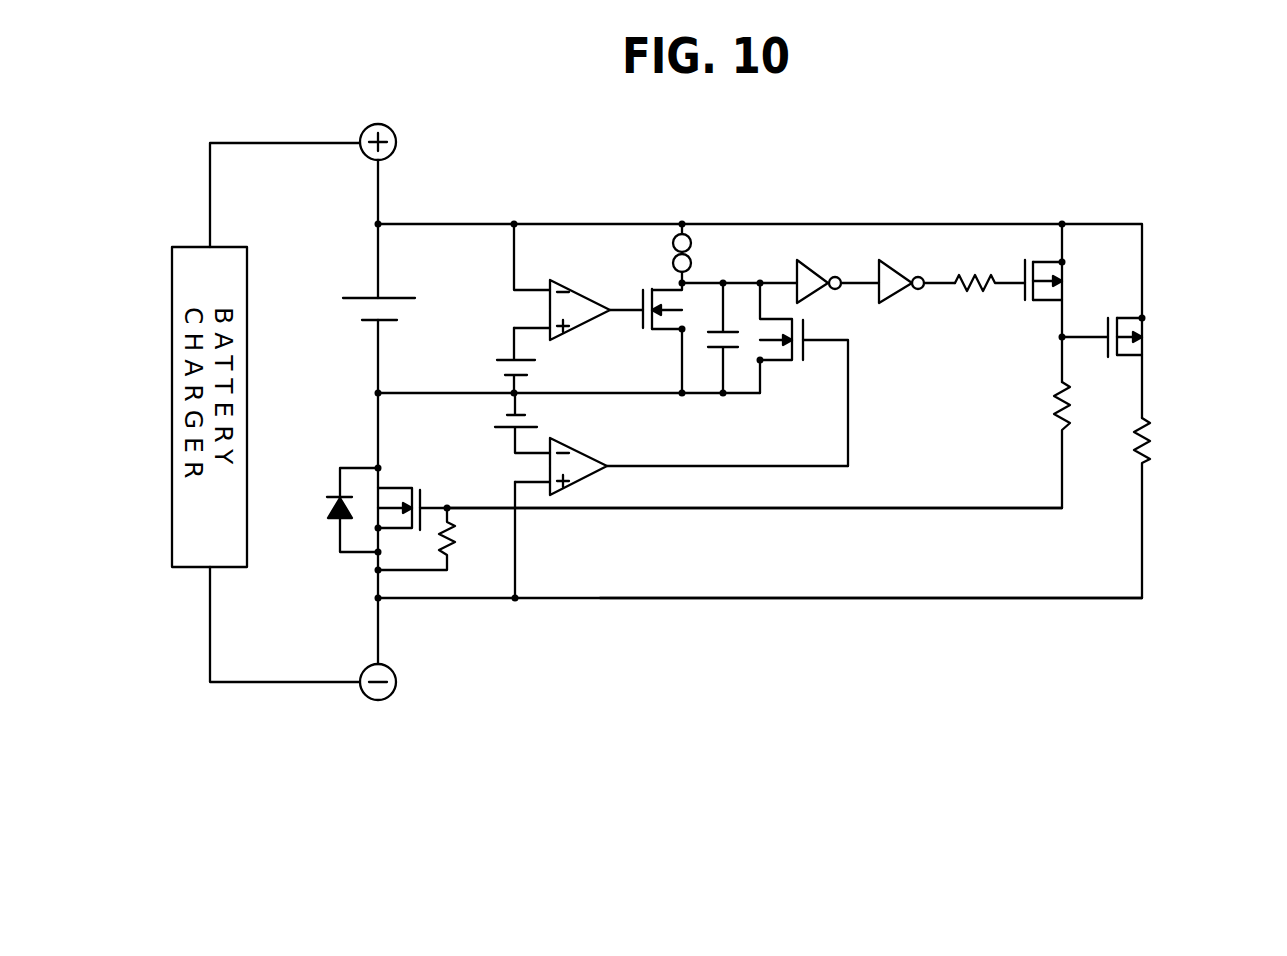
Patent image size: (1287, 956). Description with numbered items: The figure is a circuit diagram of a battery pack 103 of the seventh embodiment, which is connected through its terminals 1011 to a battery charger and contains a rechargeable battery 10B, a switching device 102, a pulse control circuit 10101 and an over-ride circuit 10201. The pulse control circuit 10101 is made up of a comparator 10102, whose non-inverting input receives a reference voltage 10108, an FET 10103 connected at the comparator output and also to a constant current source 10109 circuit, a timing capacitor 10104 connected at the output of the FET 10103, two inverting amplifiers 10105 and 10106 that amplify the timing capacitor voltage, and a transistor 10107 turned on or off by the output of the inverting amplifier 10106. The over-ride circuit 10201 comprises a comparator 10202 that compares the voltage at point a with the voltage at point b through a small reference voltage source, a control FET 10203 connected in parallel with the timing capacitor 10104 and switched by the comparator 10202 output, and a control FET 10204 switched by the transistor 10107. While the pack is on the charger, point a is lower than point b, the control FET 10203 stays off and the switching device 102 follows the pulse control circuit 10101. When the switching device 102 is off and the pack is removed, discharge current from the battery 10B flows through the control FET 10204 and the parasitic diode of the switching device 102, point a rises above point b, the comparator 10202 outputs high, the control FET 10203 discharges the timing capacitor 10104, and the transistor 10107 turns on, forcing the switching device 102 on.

The battery terminals 1011 is at (397, 143).
The rechargeable battery 10B is at (344, 304).
The switching device 102 is at (405, 485).
The point a is at (525, 561).
The point b is at (512, 398).
The battery pack 103 is at (1087, 636).
The pulse control circuit 10101 is at (854, 194).
The comparator 10102 is at (598, 263).
The FET 10103 is at (652, 330).
The timing capacitor 10104 is at (730, 322).
The inverting amplifier 10105 is at (810, 266).
The inverting amplifier 10106 is at (900, 293).
The transistor 10107 is at (1033, 303).
The reference voltage 10108 is at (498, 360).
The constant current source 10109 is at (668, 238).
The over-ride circuit 10201 is at (765, 485).
The comparator 10202 is at (620, 447).
The control FET 10203 is at (785, 365).
The control FET 10204 is at (1146, 325).